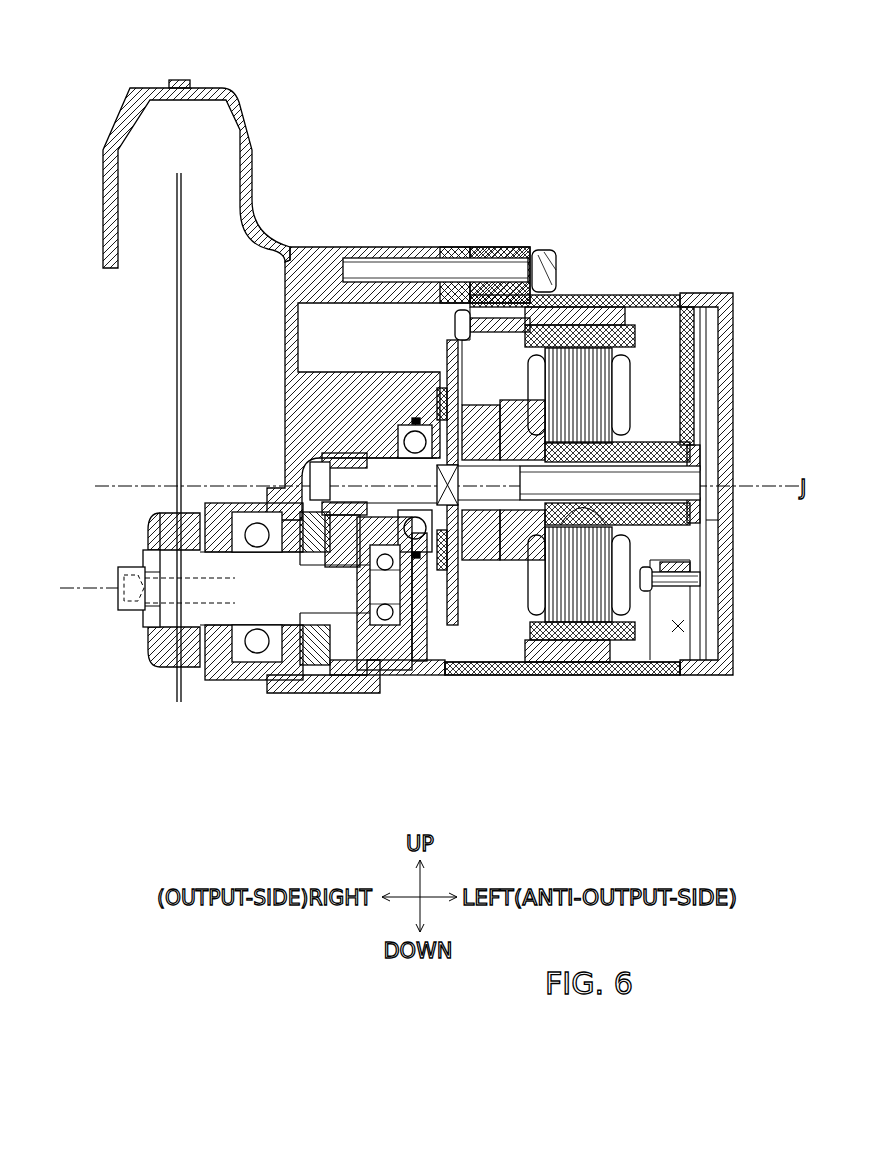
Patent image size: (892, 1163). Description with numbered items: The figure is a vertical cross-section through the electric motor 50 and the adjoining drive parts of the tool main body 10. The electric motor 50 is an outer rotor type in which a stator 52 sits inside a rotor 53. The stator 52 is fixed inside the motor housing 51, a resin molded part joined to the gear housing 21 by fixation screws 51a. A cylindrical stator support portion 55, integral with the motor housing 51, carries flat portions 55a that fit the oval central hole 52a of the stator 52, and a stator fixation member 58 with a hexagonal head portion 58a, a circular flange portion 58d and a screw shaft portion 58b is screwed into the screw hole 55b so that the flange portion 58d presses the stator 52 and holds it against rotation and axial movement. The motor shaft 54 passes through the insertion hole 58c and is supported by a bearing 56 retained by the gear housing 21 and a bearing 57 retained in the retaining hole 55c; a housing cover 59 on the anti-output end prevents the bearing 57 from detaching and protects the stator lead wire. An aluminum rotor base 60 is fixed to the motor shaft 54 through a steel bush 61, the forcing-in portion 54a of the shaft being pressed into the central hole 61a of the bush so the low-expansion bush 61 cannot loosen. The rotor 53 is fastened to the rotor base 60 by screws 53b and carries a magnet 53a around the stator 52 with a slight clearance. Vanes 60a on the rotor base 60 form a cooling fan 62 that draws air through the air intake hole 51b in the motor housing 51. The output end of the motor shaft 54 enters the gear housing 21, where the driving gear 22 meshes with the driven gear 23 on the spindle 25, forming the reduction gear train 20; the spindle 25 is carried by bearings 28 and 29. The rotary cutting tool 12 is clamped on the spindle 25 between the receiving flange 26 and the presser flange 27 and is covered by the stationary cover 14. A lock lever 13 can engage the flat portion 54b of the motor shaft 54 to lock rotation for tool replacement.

The tool main body 10 is at (262, 112).
The stationary cover 14 is at (122, 132).
The rotary cutting tool 12 is at (175, 300).
The gear housing 21 is at (313, 245).
The flat portion 54b is at (352, 468).
The bearing 56 is at (384, 430).
The rotor base 60 is at (447, 360).
The cooling fan 62 is at (442, 392).
The screws 53b is at (455, 262).
The vanes 60a is at (490, 280).
The steel bush 61 is at (503, 440).
The forcing-in portion 54a is at (528, 300).
The fixation screws 51a is at (548, 290).
The screw shaft portion 58b is at (590, 300).
The motor housing 51 is at (630, 300).
The electric motor 50 is at (637, 451).
The rotor 53 is at (612, 338).
The stator 52 is at (582, 378).
The flat portions 55a is at (618, 450).
The stator support portion 55 is at (690, 440).
The retaining hole 55c is at (620, 480).
The bearing 57 is at (600, 524).
The insertion hole 58c is at (650, 560).
The housing cover 59 is at (735, 620).
The air intake hole 51b is at (678, 632).
The screw hole 55b is at (610, 530).
The central hole 52a is at (585, 545).
The magnet 53a is at (555, 645).
The flange portion 58d is at (515, 505).
The stator fixation member 58 is at (500, 515).
The hexagonal head portion 58a is at (452, 662).
The lock lever 13 is at (420, 675).
The bearing 29 is at (385, 690).
The central hole 61a is at (368, 670).
The driven gear 23 is at (330, 660).
The reduction gear train 20 is at (318, 650).
The bearing 28 is at (255, 663).
The spindle 25 is at (253, 603).
The presser flange 27 is at (157, 538).
The receiving flange 26 is at (185, 507).
The motor shaft 54 is at (388, 474).
The driving gear 22 is at (330, 455).